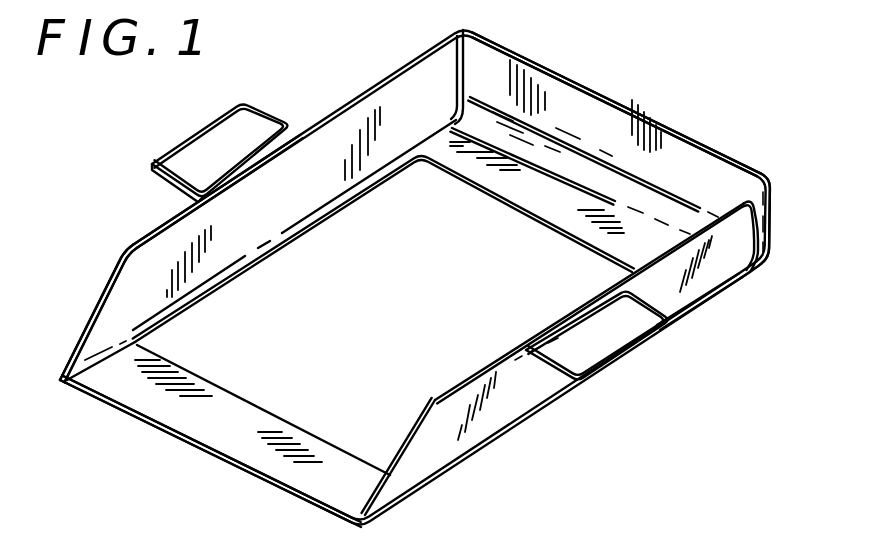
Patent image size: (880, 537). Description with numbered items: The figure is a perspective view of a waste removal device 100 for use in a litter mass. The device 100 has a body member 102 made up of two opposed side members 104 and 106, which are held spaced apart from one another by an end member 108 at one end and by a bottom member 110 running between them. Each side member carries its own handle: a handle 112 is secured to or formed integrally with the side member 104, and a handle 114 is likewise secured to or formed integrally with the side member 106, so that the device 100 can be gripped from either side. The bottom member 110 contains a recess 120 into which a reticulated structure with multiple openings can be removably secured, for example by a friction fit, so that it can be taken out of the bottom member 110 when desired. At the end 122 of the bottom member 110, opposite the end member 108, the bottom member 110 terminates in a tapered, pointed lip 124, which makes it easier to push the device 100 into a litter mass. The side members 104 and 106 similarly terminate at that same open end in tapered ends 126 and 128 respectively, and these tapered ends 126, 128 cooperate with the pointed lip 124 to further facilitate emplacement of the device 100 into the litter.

The device 100 is at (386, 71).
The body member 102 is at (765, 272).
The side member 104 is at (724, 266).
The side member 106 is at (150, 250).
The end member 108 is at (628, 128).
The bottom member 110 is at (370, 480).
The handle 112 is at (635, 350).
The handle 114 is at (208, 128).
The recess 120 is at (290, 410).
The end 122 is at (206, 432).
The lip 124 is at (122, 418).
The tapered end 126 is at (430, 420).
The tapered end 128 is at (102, 290).